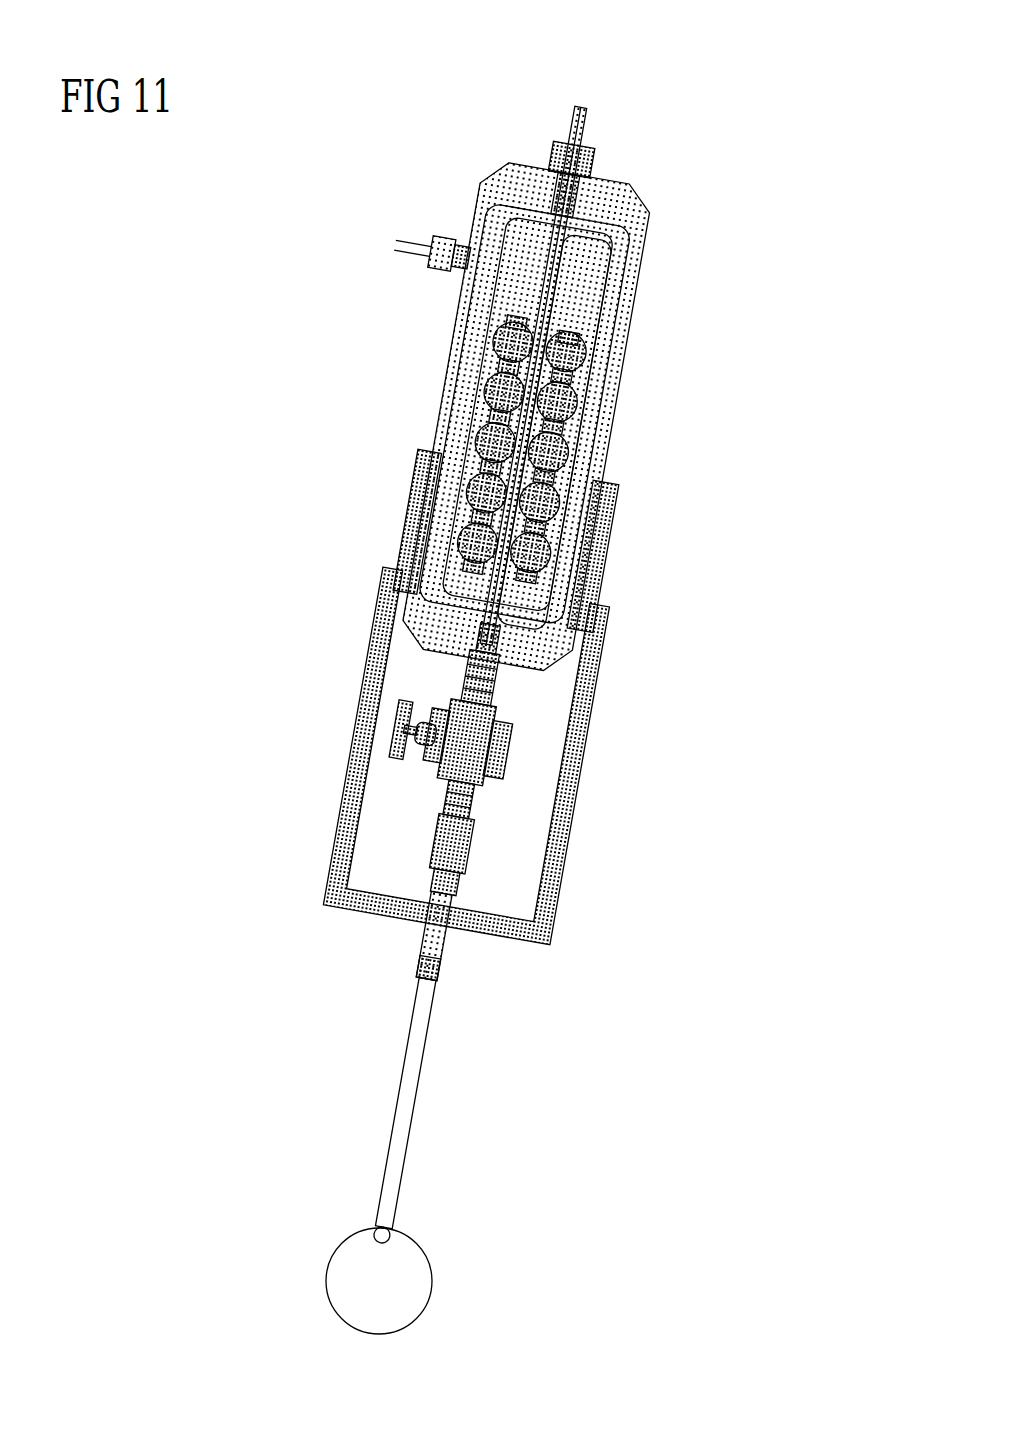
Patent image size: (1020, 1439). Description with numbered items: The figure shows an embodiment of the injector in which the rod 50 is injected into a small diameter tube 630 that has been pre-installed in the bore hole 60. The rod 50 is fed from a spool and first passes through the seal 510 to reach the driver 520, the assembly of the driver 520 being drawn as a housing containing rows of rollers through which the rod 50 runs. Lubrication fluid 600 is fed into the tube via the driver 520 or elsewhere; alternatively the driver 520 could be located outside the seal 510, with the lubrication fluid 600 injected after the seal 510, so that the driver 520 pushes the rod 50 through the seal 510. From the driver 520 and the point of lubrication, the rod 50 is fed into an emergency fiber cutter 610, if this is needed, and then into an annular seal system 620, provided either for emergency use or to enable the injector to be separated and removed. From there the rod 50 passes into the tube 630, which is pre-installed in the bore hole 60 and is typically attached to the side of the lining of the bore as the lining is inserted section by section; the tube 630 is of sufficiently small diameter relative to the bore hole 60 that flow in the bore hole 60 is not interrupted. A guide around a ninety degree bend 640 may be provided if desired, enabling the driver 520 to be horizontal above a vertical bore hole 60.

The rod 50 is at (578, 118).
The seal 510 is at (580, 173).
The lubrication fluid 600 is at (390, 250).
The driver 520 is at (553, 448).
The emergency fiber cutter 610 is at (513, 737).
The annular sealing system 620 is at (417, 813).
The tube 630 is at (422, 942).
The 90 degree bend 640 is at (390, 1130).
The bore hole 60 is at (338, 1305).